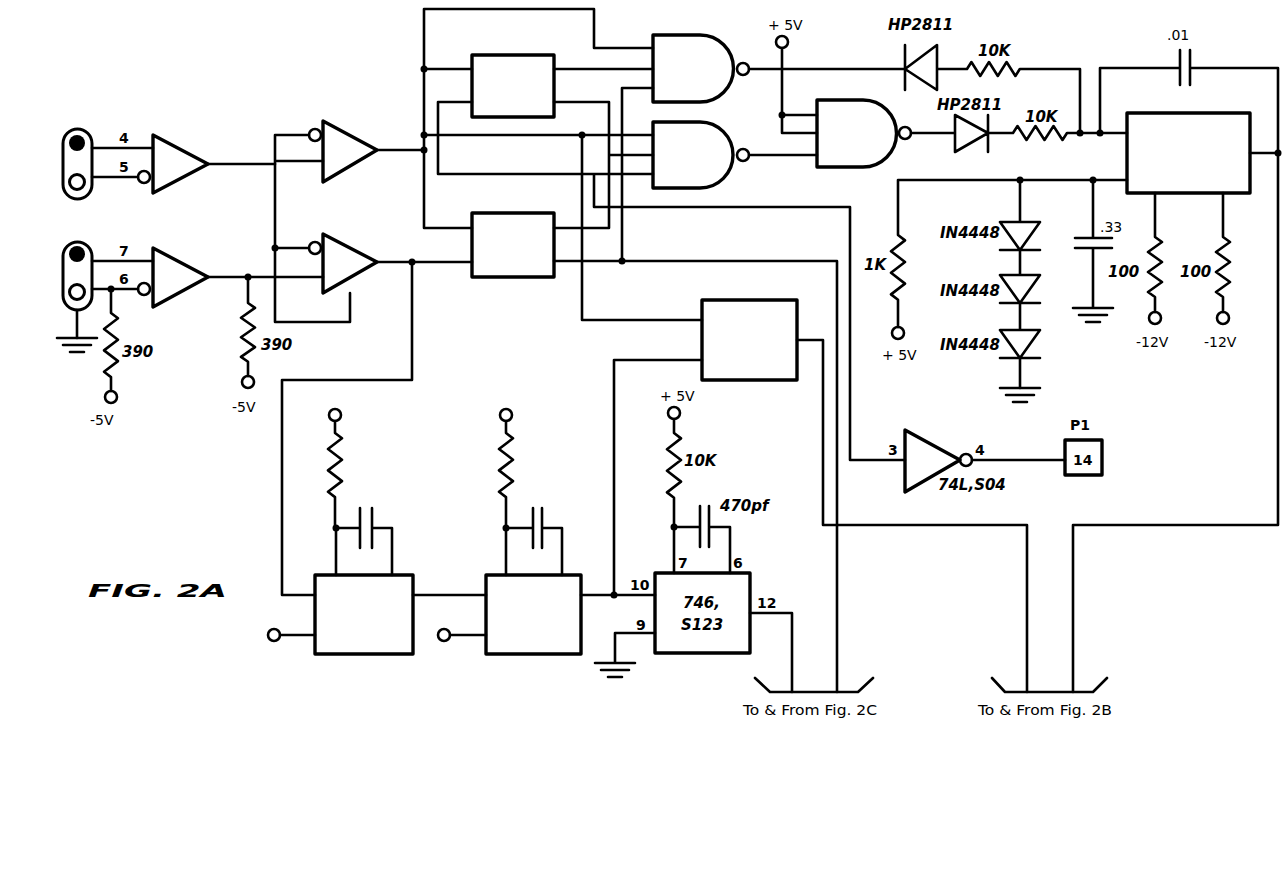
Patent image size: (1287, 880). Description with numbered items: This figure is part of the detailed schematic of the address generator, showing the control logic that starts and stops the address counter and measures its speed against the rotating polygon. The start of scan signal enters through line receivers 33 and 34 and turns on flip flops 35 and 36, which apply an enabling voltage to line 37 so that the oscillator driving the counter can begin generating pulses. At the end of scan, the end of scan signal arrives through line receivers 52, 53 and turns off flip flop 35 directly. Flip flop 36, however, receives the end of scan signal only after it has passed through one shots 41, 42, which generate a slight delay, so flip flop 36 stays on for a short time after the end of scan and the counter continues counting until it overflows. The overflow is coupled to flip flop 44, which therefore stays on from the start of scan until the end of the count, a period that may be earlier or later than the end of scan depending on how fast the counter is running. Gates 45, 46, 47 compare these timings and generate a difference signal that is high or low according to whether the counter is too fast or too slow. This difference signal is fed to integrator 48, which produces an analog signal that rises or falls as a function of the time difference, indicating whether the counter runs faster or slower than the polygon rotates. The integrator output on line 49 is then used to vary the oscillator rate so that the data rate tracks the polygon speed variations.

The line receiver 33 is at (173, 135).
The line receiver 34 is at (345, 121).
The line receiver 52 is at (183, 248).
The line receiver 53 is at (355, 234).
The flip flop 44 is at (517, 55).
The flip flop 35 is at (497, 277).
The gate 45 is at (712, 35).
The gate 46 is at (710, 188).
The gate 47 is at (850, 167).
The integrator 48 is at (1160, 113).
The line 49 is at (1162, 525).
The flip flop 36 is at (755, 380).
The line 37 is at (897, 525).
The one shot 41 is at (342, 654).
The one shot 42 is at (505, 654).